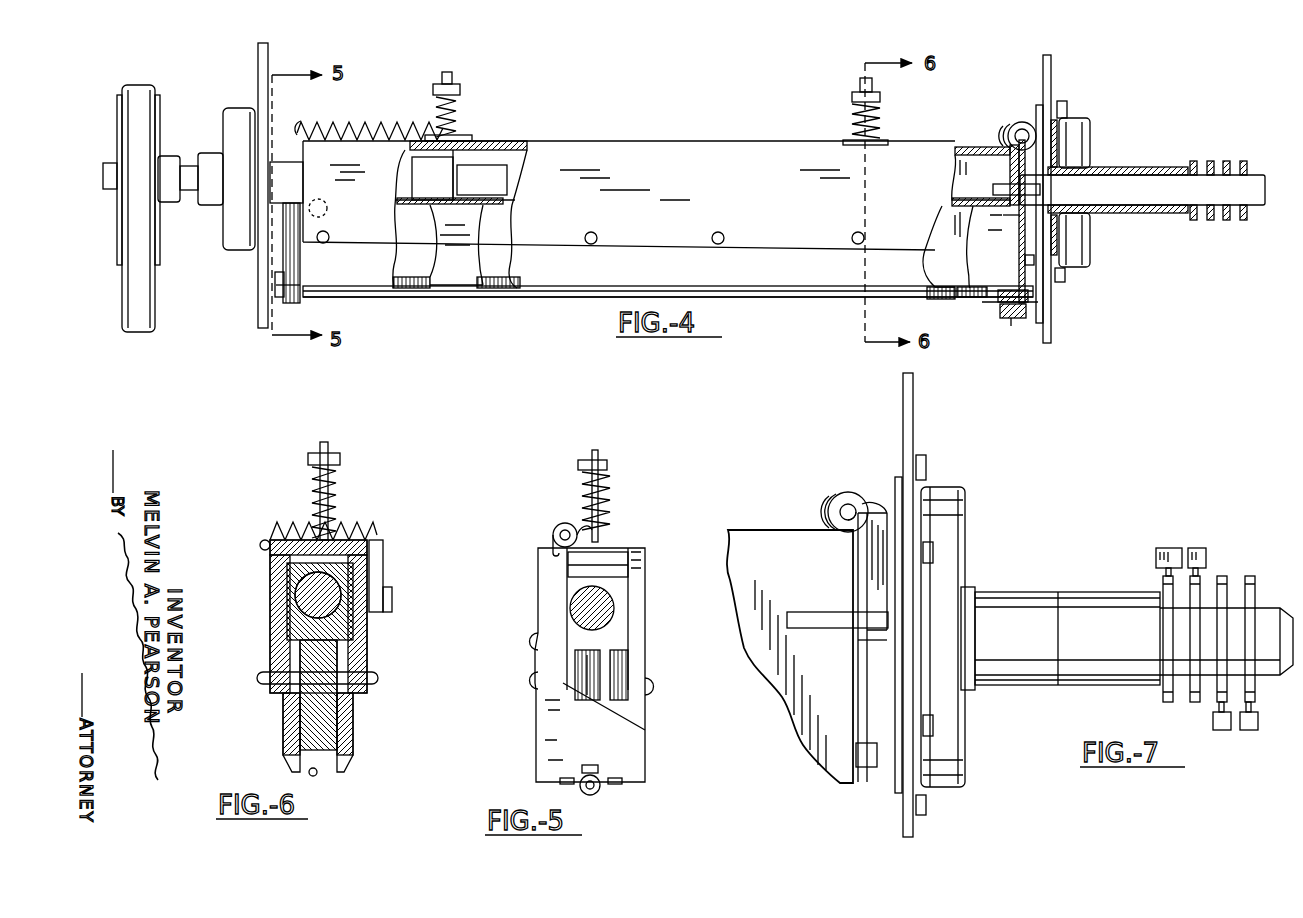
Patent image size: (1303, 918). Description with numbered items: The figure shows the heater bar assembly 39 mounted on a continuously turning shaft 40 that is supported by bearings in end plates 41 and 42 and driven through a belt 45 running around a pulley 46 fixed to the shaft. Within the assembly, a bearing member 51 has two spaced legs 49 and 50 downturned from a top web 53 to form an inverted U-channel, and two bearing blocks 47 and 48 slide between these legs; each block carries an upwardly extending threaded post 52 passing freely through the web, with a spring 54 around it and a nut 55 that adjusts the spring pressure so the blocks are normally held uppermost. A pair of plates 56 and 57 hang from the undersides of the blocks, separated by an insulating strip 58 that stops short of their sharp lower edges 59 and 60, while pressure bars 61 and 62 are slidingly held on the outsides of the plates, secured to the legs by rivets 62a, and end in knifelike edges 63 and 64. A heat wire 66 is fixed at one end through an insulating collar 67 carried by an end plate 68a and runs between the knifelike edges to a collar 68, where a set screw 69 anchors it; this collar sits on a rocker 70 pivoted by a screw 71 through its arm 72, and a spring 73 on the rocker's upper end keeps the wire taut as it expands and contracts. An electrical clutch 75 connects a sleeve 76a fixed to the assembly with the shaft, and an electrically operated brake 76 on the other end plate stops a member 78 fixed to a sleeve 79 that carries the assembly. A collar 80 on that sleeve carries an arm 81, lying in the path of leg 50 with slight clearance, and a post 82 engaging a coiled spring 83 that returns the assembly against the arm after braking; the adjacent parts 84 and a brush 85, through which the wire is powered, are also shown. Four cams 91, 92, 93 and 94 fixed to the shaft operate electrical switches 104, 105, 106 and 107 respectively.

In FIG. 4, the heater bar assembly 39 is at (690, 162).
In FIG. 7, the heater bar assembly 39 is at (760, 528).
In FIG. 4, the shaft 40 is at (107, 163).
In FIG. 5, the shaft 40 is at (602, 598).
In FIG. 6, the shaft 40 is at (300, 596).
In FIG. 7, the shaft 40 is at (1267, 633).
In FIG. 4, the end plate 41 is at (262, 300).
In FIG. 4, the end plate 42 is at (1051, 340).
In FIG. 7, the end plate 42 is at (903, 438).
In FIG. 4, the belt 45 is at (140, 290).
In FIG. 4, the pulley 46 is at (160, 128).
In FIG. 4, the bearing block 47 is at (446, 155).
In FIG. 5, the bearing block 47 is at (615, 580).
In FIG. 6, the bearing block 48 is at (353, 636).
In FIG. 6, the leg 49 is at (287, 630).
In FIG. 4, the leg 50 is at (918, 160).
In FIG. 5, the leg 50 is at (645, 655).
In FIG. 6, the leg 50 is at (367, 656).
In FIG. 7, the leg 50 is at (810, 690).
In FIG. 4, the bearing member 51 is at (565, 165).
In FIG. 5, the bearing member 51 is at (636, 550).
In FIG. 4, the threaded post 52 is at (455, 78).
In FIG. 5, the threaded post 52 is at (600, 455).
In FIG. 6, the threaded post 52 is at (318, 446).
In FIG. 4, the top web 53 is at (950, 152).
In FIG. 5, the top web 53 is at (596, 557).
In FIG. 6, the top web 53 is at (362, 542).
In FIG. 5, the spring 54 is at (610, 490).
In FIG. 6, the spring 54 is at (338, 490).
In FIG. 4, the nut 55 is at (462, 90).
In FIG. 5, the nut 55 is at (608, 465).
In FIG. 6, the nut 55 is at (340, 460).
In FIG. 5, the plate 56 is at (575, 680).
In FIG. 6, the plate 56 is at (285, 712).
In FIG. 4, the plate 57 is at (405, 285).
In FIG. 5, the plate 57 is at (628, 672).
In FIG. 6, the plate 57 is at (353, 712).
In FIG. 4, the insulating strip 58 is at (478, 234).
In FIG. 5, the insulating strip 58 is at (590, 700).
In FIG. 6, the insulating strip 58 is at (337, 735).
In FIG. 6, the sharp line edge 59 is at (288, 757).
In FIG. 6, the sharp line edge 60 is at (350, 757).
In FIG. 6, the pressure bar 61 is at (285, 737).
In FIG. 4, the pressure bar 62 is at (350, 275).
In FIG. 5, the pressure bar 62 is at (632, 712).
In FIG. 6, the pressure bar 62 is at (347, 765).
In FIG. 7, the pressure bar 62 is at (822, 750).
In FIG. 4, the rivet 62a is at (598, 236).
In FIG. 5, the rivet 62a is at (535, 688).
In FIG. 6, the rivet 62a is at (263, 678).
In FIG. 6, the knifelike edge 63 is at (292, 772).
In FIG. 4, the knifelike edge 64 is at (780, 298).
In FIG. 6, the knifelike edge 64 is at (344, 772).
In FIG. 4, the heat wire 66 is at (440, 298).
In FIG. 5, the heat wire 66 is at (622, 783).
In FIG. 6, the heat wire 66 is at (318, 775).
In FIG. 4, the insulating collar 67 is at (1008, 320).
In FIG. 4, the collar 68 is at (272, 302).
In FIG. 5, the collar 68 is at (600, 783).
In FIG. 4, the end plate 68a is at (1014, 322).
In FIG. 4, the set screw 69 is at (275, 281).
In FIG. 5, the set screw 69 is at (598, 768).
In FIG. 4, the rocker 70 is at (300, 138).
In FIG. 5, the rocker 70 is at (548, 760).
In FIG. 4, the screw 71 is at (320, 205).
In FIG. 5, the screw 71 is at (528, 646).
In FIG. 4, the arm 72 is at (330, 212).
In FIG. 5, the arm 72 is at (533, 665).
In FIG. 4, the spring 73 is at (362, 126).
In FIG. 5, the spring 73 is at (556, 530).
In FIG. 6, the spring 73 is at (352, 532).
In FIG. 4, the electrical clutch 75 is at (250, 113).
In FIG. 4, the electrically operated brake 76 is at (1078, 268).
In FIG. 7, the electrically operated brake 76 is at (953, 765).
In FIG. 4, the sleeve 76a is at (282, 183).
In FIG. 4, the member 78 is at (1041, 108).
In FIG. 4, the sleeve 79 is at (1093, 215).
In FIG. 7, the sleeve 79 is at (1008, 652).
In FIG. 4, the collar 80 is at (1015, 218).
In FIG. 7, the collar 80 is at (858, 640).
In FIG. 4, the arm 81 is at (993, 190).
In FIG. 6, the arm 81 is at (392, 600).
In FIG. 7, the arm 81 is at (820, 614).
In FIG. 4, the post 82 is at (1010, 162).
In FIG. 6, the post 82 is at (383, 562).
In FIG. 7, the post 82 is at (858, 558).
In FIG. 4, the coiled spring 83 is at (1013, 128).
In FIG. 6, the coiled spring 83 is at (268, 538).
In FIG. 7, the coiled spring 83 is at (836, 494).
In FIG. 4, the plate 84 is at (1039, 130).
In FIG. 7, the plate 84 is at (895, 490).
In FIG. 4, the brush 85 is at (1025, 260).
In FIG. 7, the brush 85 is at (870, 767).
In FIG. 4, the cam 91 is at (1193, 161).
In FIG. 7, the cam 91 is at (1163, 700).
In FIG. 4, the cam 92 is at (1210, 221).
In FIG. 7, the cam 92 is at (1203, 595).
In FIG. 4, the cam 93 is at (1227, 161).
In FIG. 7, the cam 93 is at (1224, 576).
In FIG. 4, the cam 94 is at (1243, 221).
In FIG. 7, the cam 94 is at (1250, 576).
In FIG. 7, the electrical switch 104 is at (1168, 548).
In FIG. 7, the electrical switch 105 is at (1195, 548).
In FIG. 7, the electrical switch 106 is at (1220, 730).
In FIG. 7, the electrical switch 107 is at (1250, 730).